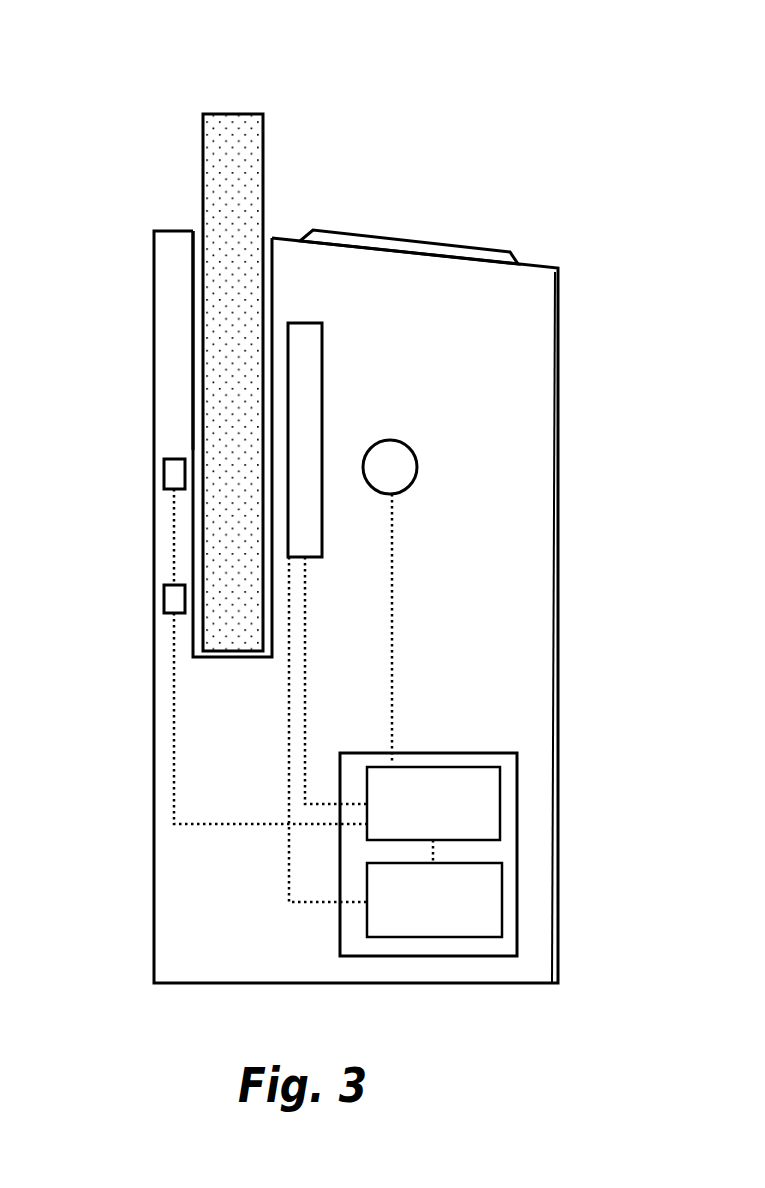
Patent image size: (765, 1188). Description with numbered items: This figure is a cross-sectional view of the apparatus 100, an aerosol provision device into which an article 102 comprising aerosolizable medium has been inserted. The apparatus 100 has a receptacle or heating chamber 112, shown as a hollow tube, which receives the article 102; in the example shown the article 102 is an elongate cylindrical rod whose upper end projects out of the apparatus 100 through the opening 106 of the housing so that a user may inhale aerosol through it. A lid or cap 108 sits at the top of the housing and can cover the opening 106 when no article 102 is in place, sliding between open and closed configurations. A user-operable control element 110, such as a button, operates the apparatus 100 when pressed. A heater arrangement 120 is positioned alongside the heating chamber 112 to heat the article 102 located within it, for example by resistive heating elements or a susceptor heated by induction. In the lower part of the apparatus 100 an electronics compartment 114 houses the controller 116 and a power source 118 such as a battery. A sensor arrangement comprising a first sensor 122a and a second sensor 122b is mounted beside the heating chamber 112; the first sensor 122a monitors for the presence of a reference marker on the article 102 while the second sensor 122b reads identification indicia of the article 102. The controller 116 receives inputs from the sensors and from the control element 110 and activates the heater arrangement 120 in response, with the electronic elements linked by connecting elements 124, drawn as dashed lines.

The apparatus 100 is at (398, 133).
The article 102 is at (218, 172).
The opening 106 is at (238, 233).
The cap 108 is at (466, 254).
The user-operable control element 110 is at (393, 473).
The heating chamber 112 is at (193, 384).
The electronics compartment 114 is at (427, 754).
The controller 116 is at (415, 816).
The power source 118 is at (415, 917).
The heater arrangement 120 is at (322, 377).
The first sensor 122a is at (165, 473).
The second sensor 122b is at (165, 596).
The connecting elements 124 is at (392, 577).